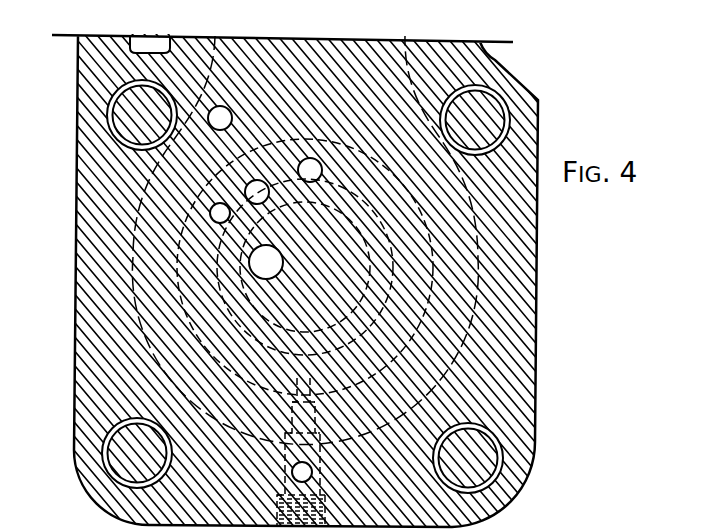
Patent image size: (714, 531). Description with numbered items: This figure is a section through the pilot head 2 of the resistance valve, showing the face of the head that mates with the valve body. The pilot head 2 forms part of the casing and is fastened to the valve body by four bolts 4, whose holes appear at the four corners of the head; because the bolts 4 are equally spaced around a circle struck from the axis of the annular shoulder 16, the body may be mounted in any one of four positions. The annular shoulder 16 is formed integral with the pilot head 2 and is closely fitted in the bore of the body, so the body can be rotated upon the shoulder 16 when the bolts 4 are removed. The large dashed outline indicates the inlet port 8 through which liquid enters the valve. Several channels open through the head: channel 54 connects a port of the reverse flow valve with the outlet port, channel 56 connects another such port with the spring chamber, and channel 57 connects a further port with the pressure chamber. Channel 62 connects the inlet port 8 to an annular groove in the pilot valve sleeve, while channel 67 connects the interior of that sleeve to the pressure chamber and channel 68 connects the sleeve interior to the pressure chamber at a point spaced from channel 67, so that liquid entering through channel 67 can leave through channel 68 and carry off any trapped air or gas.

The pilot head 2 is at (88, 336).
The bolts 4 is at (149, 124).
The inlet port 8 is at (128, 244).
The annular shoulder 16 is at (408, 172).
The channel 54 is at (312, 462).
The channel 56 is at (273, 278).
The channel 57 is at (211, 209).
The channel 62 is at (228, 110).
The channel 67 is at (253, 179).
The channel 68 is at (310, 170).